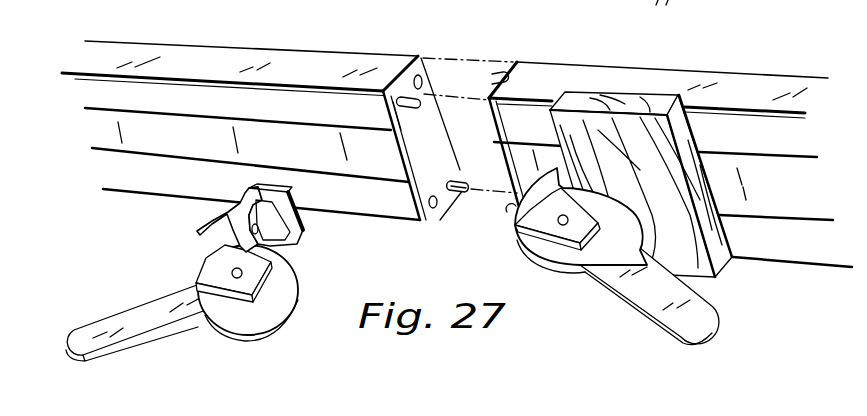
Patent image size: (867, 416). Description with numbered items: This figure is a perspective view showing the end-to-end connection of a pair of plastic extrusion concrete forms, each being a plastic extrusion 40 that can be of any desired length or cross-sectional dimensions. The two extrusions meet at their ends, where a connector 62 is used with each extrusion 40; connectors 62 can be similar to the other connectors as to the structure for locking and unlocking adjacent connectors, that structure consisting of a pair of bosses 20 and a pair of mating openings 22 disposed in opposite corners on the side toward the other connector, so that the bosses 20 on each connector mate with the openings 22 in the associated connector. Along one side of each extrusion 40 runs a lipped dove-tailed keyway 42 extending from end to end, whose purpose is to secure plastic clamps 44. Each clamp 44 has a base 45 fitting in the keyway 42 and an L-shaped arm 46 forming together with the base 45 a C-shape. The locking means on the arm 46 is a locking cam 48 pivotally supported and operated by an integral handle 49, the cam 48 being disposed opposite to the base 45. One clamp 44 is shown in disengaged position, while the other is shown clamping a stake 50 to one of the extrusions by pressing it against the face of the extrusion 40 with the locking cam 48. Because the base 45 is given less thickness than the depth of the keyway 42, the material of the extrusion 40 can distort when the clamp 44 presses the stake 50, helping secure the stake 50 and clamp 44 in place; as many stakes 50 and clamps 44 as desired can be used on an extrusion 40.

The boss 20 is at (467, 181).
The mating opening 22 is at (424, 81).
The plastic extrusion 40 is at (273, 70).
The lipped dove-tailed keyway 42 is at (145, 138).
The plastic clamp 44 is at (290, 307).
The base 45 is at (298, 241).
The L-shaped arm 46 is at (217, 236).
The locking cam 48 is at (246, 313).
The handle 49 is at (132, 317).
The stake 50 is at (657, 103).
The connector 62 is at (423, 60).